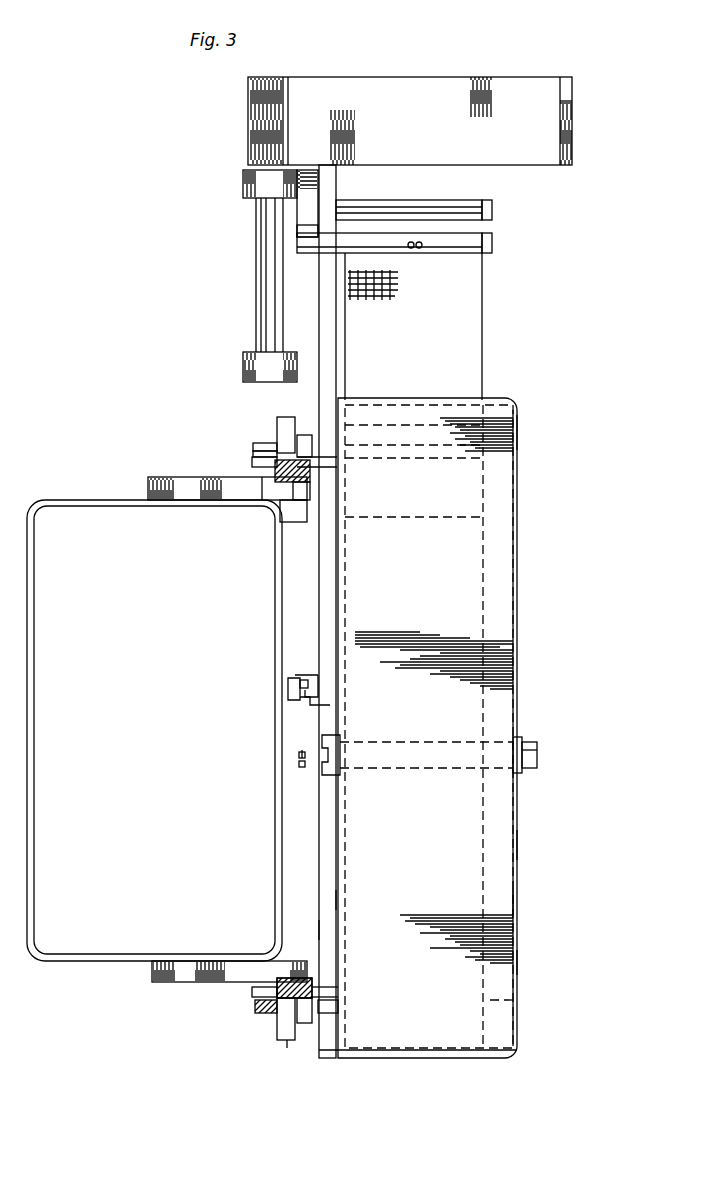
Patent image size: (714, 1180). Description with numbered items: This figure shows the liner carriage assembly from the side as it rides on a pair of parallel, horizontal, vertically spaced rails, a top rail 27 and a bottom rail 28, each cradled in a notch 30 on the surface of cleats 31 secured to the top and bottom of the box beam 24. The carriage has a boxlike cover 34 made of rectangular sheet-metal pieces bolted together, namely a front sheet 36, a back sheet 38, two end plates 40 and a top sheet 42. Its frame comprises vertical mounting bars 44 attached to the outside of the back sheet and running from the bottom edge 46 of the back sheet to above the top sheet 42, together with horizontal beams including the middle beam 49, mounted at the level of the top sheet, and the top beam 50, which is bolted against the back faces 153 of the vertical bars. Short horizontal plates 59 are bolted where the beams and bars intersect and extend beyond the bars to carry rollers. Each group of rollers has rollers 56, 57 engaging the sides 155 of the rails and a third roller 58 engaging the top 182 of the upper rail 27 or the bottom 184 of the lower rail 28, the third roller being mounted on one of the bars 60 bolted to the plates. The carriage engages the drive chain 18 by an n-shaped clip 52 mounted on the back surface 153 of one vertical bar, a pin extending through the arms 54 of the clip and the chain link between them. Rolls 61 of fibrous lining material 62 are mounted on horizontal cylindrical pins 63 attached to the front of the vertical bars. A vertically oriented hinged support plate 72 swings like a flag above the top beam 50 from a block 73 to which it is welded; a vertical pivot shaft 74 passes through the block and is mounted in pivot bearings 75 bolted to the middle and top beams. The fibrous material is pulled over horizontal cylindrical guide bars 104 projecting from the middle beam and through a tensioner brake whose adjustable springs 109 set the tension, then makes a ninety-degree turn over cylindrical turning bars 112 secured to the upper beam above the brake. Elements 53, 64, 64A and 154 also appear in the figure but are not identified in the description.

The drive chain 18 is at (300, 684).
The box beam 24 is at (40, 502).
The top rail 27 is at (297, 445).
The bottom rail 28 is at (316, 988).
The notch 30 is at (262, 495).
The cleats 31 is at (218, 492).
The boxlike cover 34 is at (455, 396).
The front sheet 36 is at (518, 842).
The back sheet 38 is at (320, 925).
The end plates 40 is at (500, 906).
The top sheet 42 is at (514, 460).
The vertical mounting bars 44 is at (337, 900).
The bottom edge 46 is at (340, 1060).
The middle beam 49 is at (337, 446).
The top beam 50 is at (302, 240).
The n-shaped clip 52 is at (315, 672).
The switch lead 53 is at (301, 745).
The arms 54 is at (294, 698).
The roller 56 is at (310, 465).
The roller 57 is at (252, 462).
The third roller 58 is at (286, 418).
The horizontal plates 59 is at (253, 454).
The bars 60 is at (253, 447).
The rolls 61 is at (520, 1000).
The fibrous lining material 62 is at (483, 302).
The horizontal cylindrical pin 63 is at (538, 756).
The adjusting shaft 64 is at (330, 777).
The shaft collar 64A is at (521, 738).
The hinged support plate 72 is at (468, 88).
The block 73 is at (248, 130).
The vertical pivot shaft 74 is at (258, 322).
The pivot bearings 75 is at (253, 200).
The horizontal cylindrical guide bars 104 is at (525, 433).
The adjustable springs 109 is at (418, 250).
The cylindrical turning bars 112 is at (493, 210).
The back faces 153 is at (268, 292).
The vertical frame column 154 is at (336, 314).
The sides 155 is at (313, 984).
The top 182 is at (296, 508).
The bottom 184 is at (287, 1048).